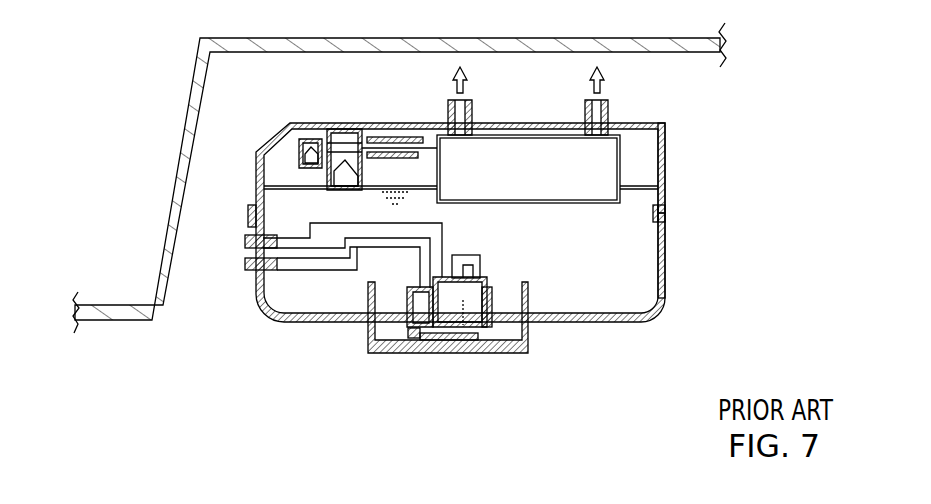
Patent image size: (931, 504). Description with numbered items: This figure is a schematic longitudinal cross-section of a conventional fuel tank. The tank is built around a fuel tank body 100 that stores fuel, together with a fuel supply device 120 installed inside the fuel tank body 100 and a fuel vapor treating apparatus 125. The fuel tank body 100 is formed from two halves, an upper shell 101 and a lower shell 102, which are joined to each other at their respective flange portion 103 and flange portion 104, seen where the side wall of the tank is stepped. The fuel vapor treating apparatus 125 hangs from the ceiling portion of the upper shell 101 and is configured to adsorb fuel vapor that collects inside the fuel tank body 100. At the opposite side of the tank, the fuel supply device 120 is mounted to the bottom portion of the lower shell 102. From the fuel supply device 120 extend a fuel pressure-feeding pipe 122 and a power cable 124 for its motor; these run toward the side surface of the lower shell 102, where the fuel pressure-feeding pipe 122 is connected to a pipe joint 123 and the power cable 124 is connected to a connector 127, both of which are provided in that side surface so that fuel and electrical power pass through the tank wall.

The fuel tank body 100 is at (676, 126).
The upper shell 101 is at (667, 159).
The lower shell 102 is at (667, 272).
The flange portion 103 is at (667, 212).
The flange portion 104 is at (667, 218).
The fuel supply device 120 is at (497, 313).
The fuel pressure-feeding pipe 122 is at (320, 220).
The pipe joint 123 is at (245, 240).
The power cable 124 is at (301, 266).
The fuel vapor treating apparatus 125 is at (527, 168).
The connector 127 is at (245, 268).